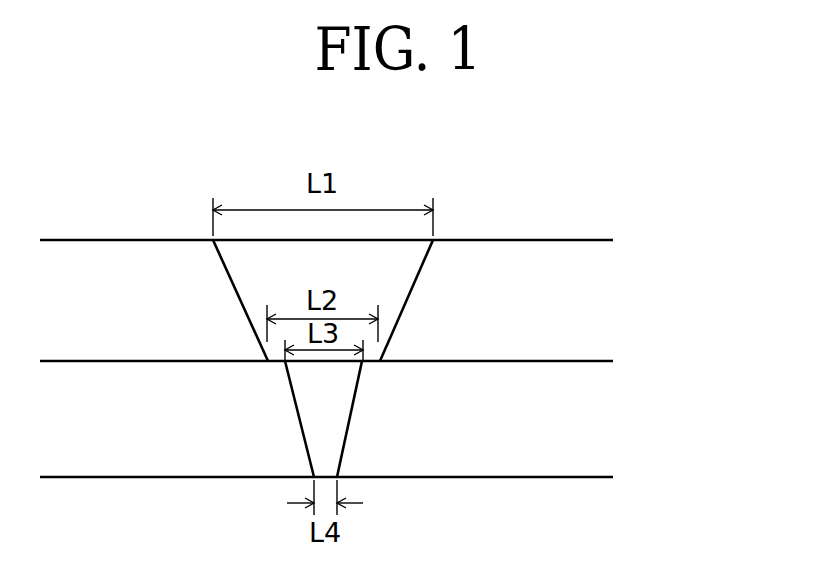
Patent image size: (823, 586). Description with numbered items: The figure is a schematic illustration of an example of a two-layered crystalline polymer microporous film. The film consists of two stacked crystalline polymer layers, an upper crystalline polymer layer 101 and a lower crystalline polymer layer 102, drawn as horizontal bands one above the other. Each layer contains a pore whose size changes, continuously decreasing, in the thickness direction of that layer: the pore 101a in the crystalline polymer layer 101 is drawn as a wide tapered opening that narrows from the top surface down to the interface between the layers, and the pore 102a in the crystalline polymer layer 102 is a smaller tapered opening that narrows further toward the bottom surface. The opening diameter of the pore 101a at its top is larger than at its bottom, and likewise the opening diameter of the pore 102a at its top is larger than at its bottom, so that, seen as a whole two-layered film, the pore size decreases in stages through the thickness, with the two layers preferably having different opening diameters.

The crystalline polymer layer 101 is at (598, 308).
The crystalline polymer layer 102 is at (598, 430).
The pore 101a is at (428, 297).
The pore 102a is at (360, 429).